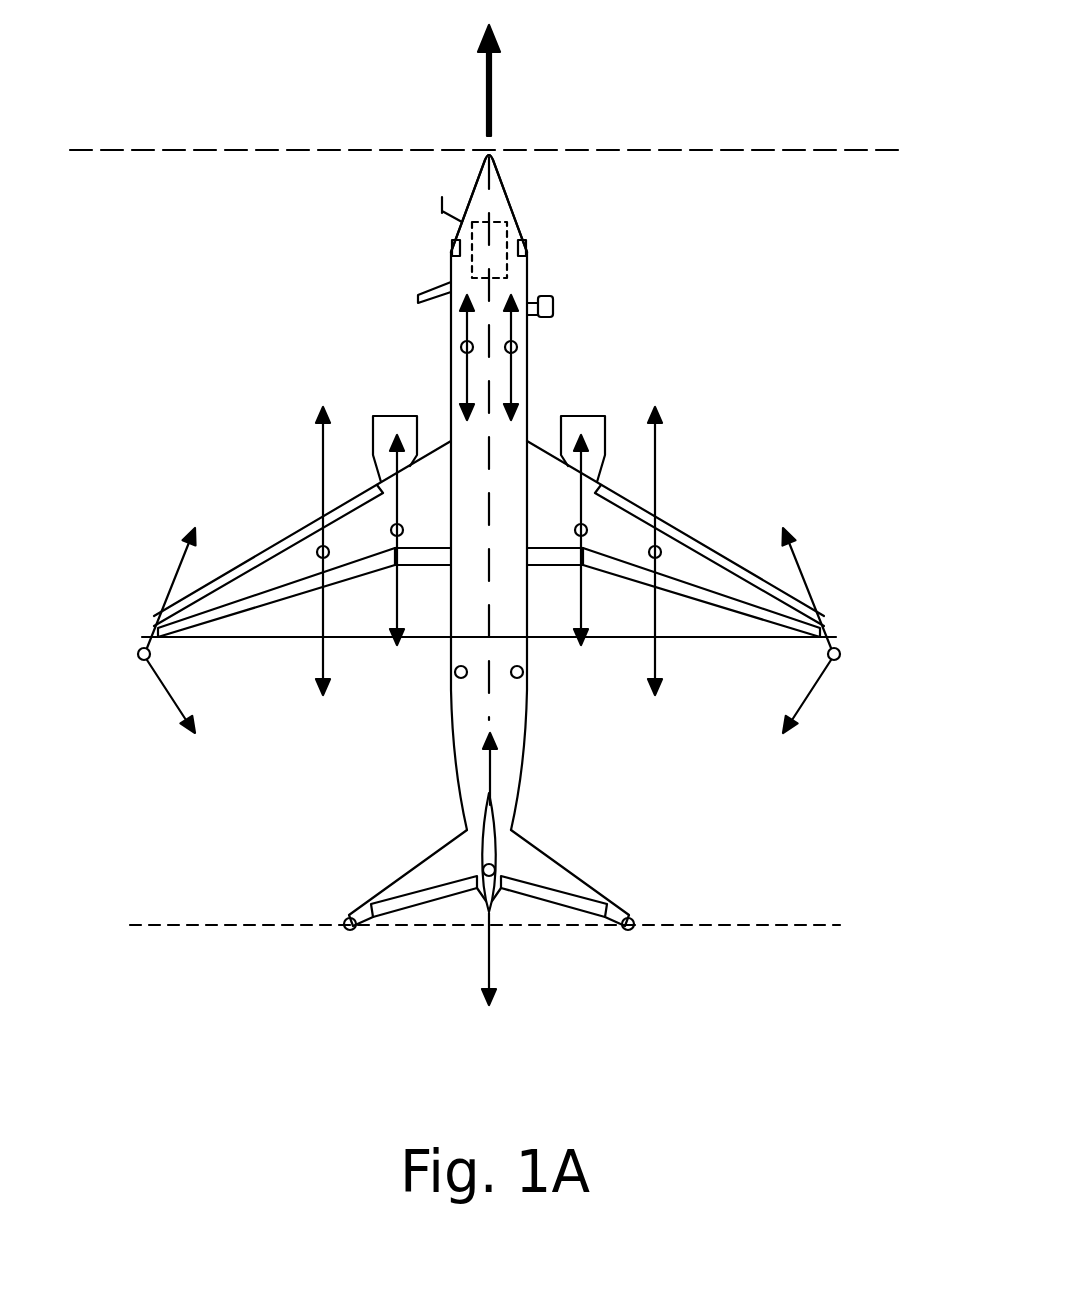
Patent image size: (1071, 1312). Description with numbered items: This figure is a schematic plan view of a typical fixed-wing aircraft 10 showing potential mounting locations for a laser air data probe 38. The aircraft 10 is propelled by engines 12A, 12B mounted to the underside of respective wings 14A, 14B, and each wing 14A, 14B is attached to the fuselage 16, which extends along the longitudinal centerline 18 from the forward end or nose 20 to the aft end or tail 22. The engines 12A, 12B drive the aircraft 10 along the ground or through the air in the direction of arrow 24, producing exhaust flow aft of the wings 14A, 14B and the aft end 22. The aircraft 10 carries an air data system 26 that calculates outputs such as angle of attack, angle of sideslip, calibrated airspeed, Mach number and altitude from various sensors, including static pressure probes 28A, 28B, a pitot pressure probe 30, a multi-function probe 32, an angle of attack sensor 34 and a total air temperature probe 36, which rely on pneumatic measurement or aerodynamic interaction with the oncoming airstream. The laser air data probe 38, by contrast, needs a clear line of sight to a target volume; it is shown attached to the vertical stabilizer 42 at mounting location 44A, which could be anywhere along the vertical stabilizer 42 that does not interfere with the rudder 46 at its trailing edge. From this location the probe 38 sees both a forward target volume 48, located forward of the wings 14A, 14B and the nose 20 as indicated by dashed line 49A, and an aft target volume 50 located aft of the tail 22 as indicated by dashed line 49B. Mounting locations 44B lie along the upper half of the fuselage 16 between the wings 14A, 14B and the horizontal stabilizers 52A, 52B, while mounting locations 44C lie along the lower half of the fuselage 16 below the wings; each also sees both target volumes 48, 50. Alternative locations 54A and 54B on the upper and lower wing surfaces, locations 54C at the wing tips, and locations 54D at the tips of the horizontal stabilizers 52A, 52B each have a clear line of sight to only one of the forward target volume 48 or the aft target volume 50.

The aircraft 10 is at (863, 260).
The engine 12A is at (372, 415).
The engine 12B is at (600, 423).
The wing 14A is at (283, 563).
The wing 14B is at (695, 563).
The fuselage 16 is at (528, 413).
The longitudinal centerline 18 is at (493, 203).
The forward end (nose) 20 is at (492, 157).
The aft end (tail) 22 is at (497, 907).
The arrow 24 is at (492, 67).
The air data system 26 is at (515, 222).
The static pressure probe 28A is at (452, 250).
The static pressure probe 28B is at (527, 243).
The pitot pressure probe 30 is at (375, 195).
The multi-function probe 32 is at (440, 210).
The angle of attack sensor 34 is at (418, 298).
The total air temperature probe 36 is at (550, 298).
The laser air data probe 38 is at (593, 804).
The vertical stabilizer 42 is at (497, 830).
The mounting location 44A is at (496, 868).
The mounting locations 44B is at (485, 519).
The mounting locations 44C is at (461, 347).
The rudder 46 is at (483, 898).
The forward target volume 48 is at (365, 60).
The dashed line 49A is at (830, 150).
The dashed line 49B is at (765, 925).
The aft target volume 50 is at (507, 1038).
The horizontal stabilizer 52A is at (413, 913).
The horizontal stabilizer 52B is at (565, 913).
The mounting locations 54A is at (318, 552).
The mounting locations 54B is at (575, 530).
The mounting locations 54C is at (138, 655).
The mounting locations 54D is at (346, 929).